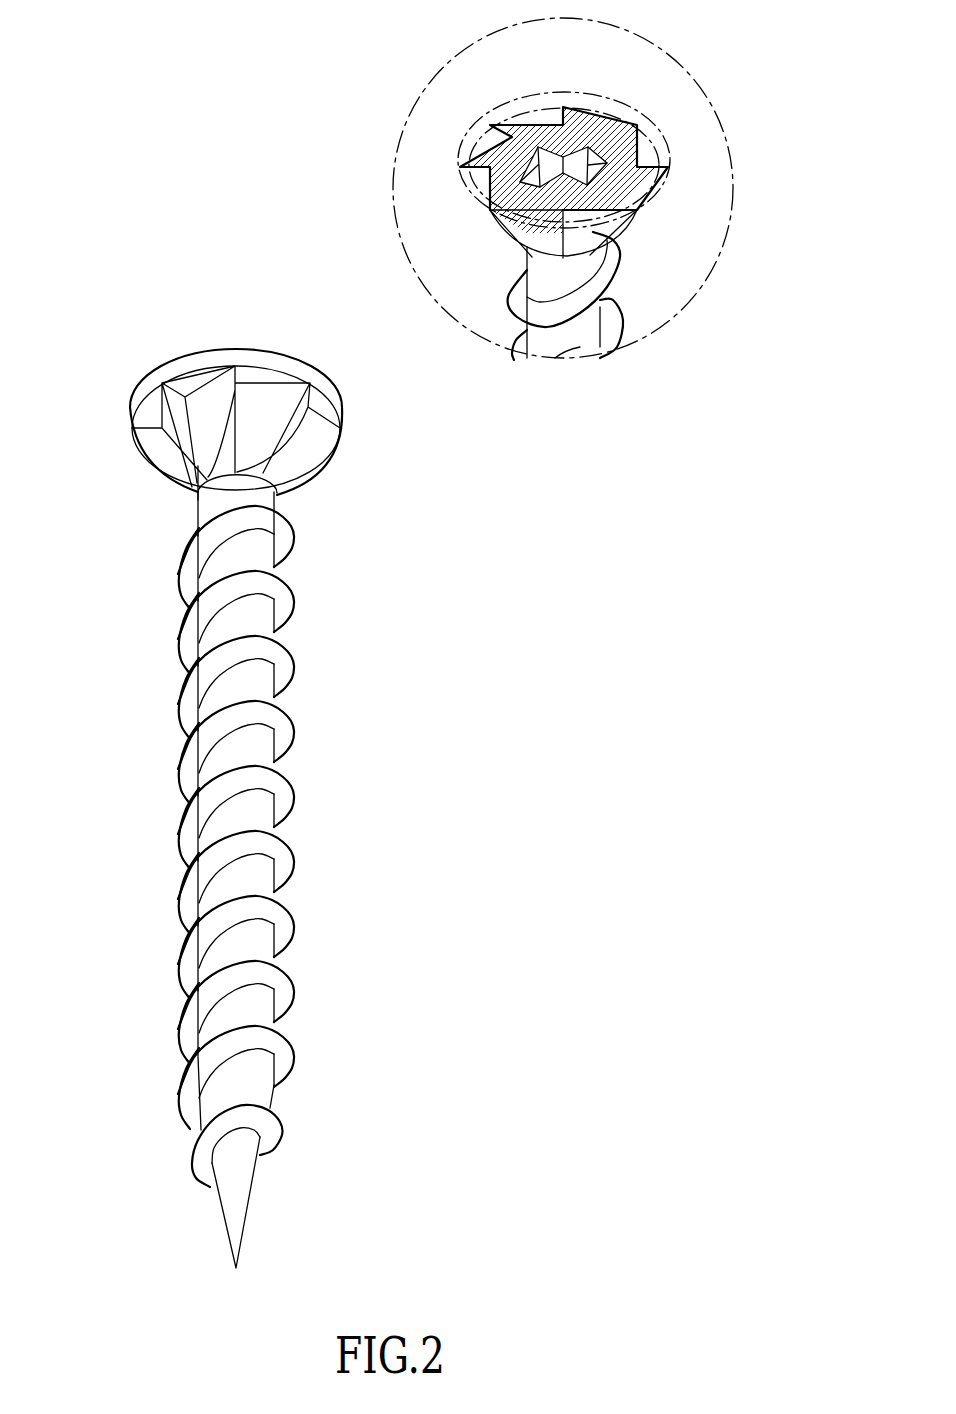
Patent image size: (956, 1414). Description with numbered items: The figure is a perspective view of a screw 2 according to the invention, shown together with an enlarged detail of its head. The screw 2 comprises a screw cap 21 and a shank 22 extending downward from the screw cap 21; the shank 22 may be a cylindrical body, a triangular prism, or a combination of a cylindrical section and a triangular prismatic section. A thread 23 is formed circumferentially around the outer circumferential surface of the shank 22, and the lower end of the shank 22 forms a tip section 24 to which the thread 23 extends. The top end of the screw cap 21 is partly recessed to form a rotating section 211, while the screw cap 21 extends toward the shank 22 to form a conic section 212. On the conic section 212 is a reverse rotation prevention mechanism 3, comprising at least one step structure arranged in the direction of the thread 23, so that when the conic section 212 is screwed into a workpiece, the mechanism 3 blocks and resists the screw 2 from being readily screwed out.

The screw 2 is at (401, 635).
The screw cap 21 is at (208, 355).
The rotating section 211 is at (552, 158).
The conic section 212 is at (155, 480).
The shank 22 is at (258, 683).
The thread 23 is at (185, 772).
The tip section 24 is at (237, 1193).
The reverse rotation prevention mechanism 3 is at (310, 445).